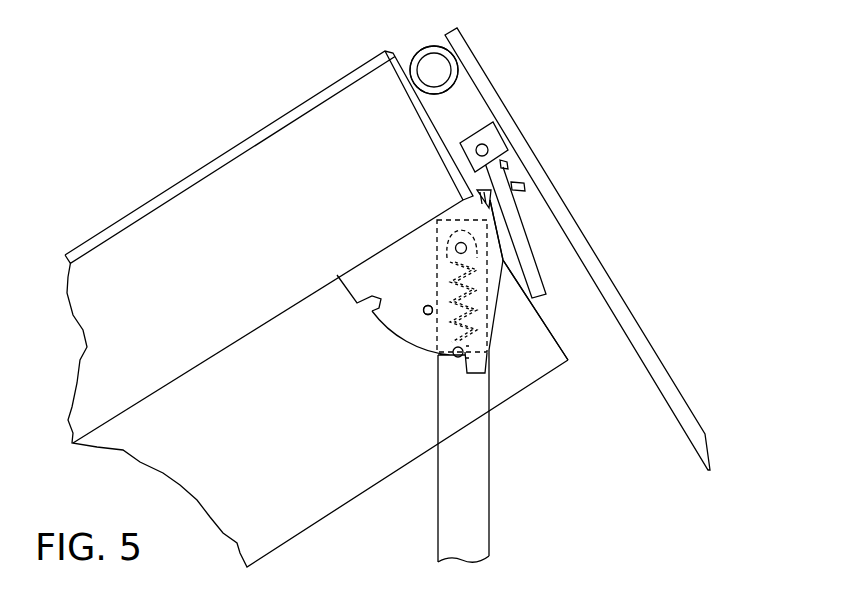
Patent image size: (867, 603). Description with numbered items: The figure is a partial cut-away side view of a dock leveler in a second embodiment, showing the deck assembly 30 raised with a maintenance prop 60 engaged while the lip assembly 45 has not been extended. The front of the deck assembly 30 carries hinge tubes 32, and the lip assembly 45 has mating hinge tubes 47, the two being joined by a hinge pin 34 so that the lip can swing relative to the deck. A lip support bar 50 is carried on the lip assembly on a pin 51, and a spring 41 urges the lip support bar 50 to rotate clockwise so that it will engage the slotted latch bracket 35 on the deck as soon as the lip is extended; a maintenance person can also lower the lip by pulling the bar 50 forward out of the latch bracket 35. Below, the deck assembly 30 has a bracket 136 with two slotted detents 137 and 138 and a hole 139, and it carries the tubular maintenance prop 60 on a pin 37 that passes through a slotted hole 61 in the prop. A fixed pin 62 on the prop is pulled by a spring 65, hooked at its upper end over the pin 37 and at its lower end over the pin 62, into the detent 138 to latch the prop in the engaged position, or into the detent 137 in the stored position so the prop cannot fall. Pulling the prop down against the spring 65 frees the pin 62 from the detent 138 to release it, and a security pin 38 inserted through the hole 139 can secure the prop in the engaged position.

The deck assembly 30 is at (215, 160).
The hinge tubes 32 is at (410, 47).
The hinge tubes 47 is at (434, 70).
The hinge pin 34 is at (440, 70).
The pin 51 is at (490, 150).
The spring 41 is at (506, 165).
The slotted latch bracket 35 is at (524, 187).
The lip assembly 45 is at (588, 240).
The lip support bar 50 is at (530, 250).
The spring 65 is at (487, 325).
The slotted hole 61 is at (437, 240).
The pin 37 is at (455, 249).
The slotted detent 137 is at (373, 307).
The bracket 136 is at (383, 327).
The security pin 38 is at (427, 315).
The hole 139 is at (428, 310).
The slotted detent 138 is at (465, 353).
The fixed pin 62 is at (485, 362).
The maintenance prop 60 is at (491, 455).